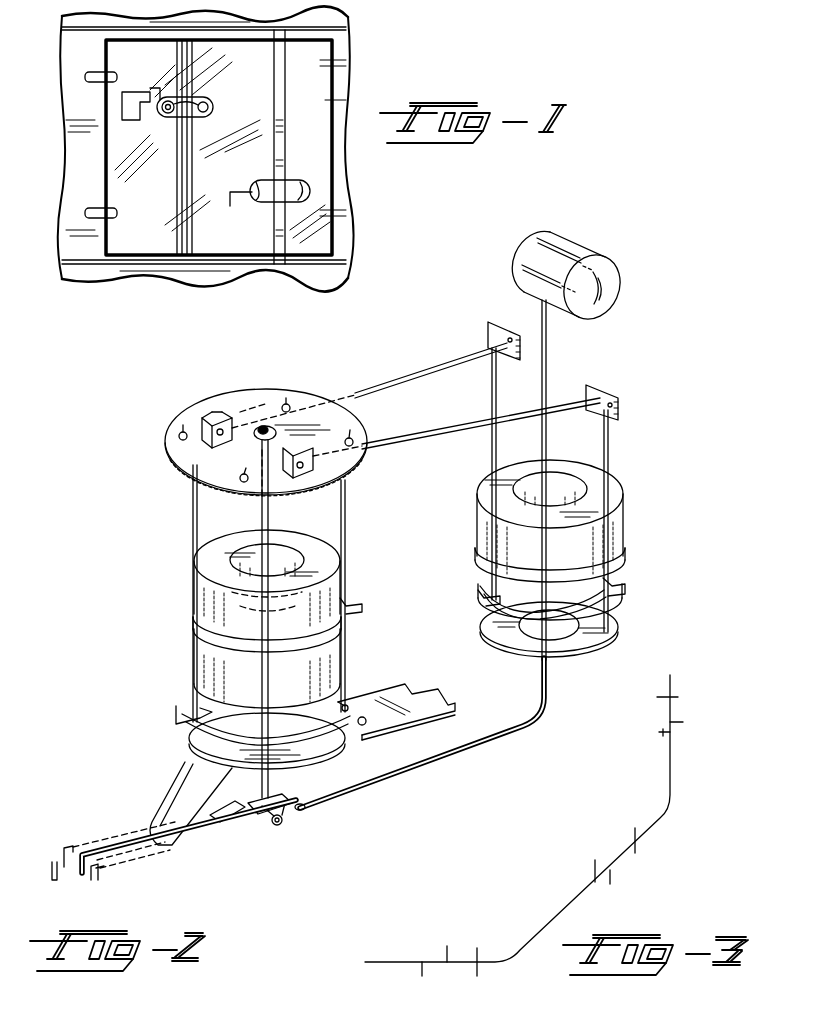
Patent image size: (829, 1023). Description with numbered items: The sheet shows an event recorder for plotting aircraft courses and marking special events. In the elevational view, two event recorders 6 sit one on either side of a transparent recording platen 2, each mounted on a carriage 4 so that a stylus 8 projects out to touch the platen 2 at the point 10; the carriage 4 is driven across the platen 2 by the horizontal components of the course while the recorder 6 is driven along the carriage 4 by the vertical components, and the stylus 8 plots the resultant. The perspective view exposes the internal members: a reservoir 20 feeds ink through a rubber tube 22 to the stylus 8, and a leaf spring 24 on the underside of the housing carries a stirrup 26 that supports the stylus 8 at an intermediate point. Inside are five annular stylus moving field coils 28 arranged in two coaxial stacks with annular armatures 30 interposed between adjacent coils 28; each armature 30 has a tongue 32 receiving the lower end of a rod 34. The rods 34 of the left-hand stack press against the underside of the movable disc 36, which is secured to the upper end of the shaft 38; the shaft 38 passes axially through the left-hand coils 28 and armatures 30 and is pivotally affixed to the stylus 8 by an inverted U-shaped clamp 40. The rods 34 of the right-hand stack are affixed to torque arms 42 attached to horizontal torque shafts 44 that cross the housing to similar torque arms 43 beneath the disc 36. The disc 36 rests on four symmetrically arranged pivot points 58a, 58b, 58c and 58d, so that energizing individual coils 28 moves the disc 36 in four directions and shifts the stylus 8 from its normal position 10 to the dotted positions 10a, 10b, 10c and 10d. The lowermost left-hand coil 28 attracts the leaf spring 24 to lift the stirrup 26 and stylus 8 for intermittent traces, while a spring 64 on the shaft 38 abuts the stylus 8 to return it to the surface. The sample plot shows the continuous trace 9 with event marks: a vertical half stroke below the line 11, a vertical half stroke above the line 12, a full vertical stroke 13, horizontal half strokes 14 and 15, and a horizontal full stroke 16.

In FIG. 1, the recording platen 2 is at (325, 80).
In FIG. 1, the carriage 4 is at (283, 107).
In FIG. 1, the event recorder 6 is at (190, 96).
In FIG. 1, the stylus 8 is at (140, 112).
In FIG. 1, the normal position of stylus 10 is at (135, 90).
In FIG. 2, the normal position of stylus 10 is at (80, 876).
In FIG. 2, the dotted stylus position 10a is at (52, 878).
In FIG. 2, the dotted stylus position 10b is at (64, 850).
In FIG. 2, the dotted stylus position 10c is at (95, 882).
In FIG. 2, the dotted stylus position 10d is at (102, 870).
In FIG. 2, the reservoir 20 is at (608, 292).
In FIG. 2, the rubber tube 22 is at (546, 375).
In FIG. 2, the leaf spring 24 is at (410, 690).
In FIG. 2, the stirrup 26 is at (178, 778).
In FIG. 2, the stylus moving field coil 28 is at (312, 545).
In FIG. 2, the armature 30 is at (200, 634).
In FIG. 2, the tongue 32 is at (363, 608).
In FIG. 2, the rod 34 is at (346, 555).
In FIG. 2, the movable disc 36 is at (238, 398).
In FIG. 2, the shaft 38 is at (270, 516).
In FIG. 2, the inverted U-shaped clamp 40 is at (276, 796).
In FIG. 2, the torque arm 42 is at (488, 334).
In FIG. 2, the torque arm 43 is at (207, 412).
In FIG. 2, the torque shaft 44 is at (445, 370).
In FIG. 2, the pivot point 58a is at (182, 428).
In FIG. 2, the pivot point 58b is at (244, 483).
In FIG. 2, the pivot point 58c is at (288, 400).
In FIG. 2, the pivot point 58d is at (352, 438).
In FIG. 2, the spring 64 is at (230, 816).
In FIG. 3, the continuous plot 9 is at (671, 777).
In FIG. 3, the vertical half stroke below the line 11 is at (613, 880).
In FIG. 3, the vertical half stroke above the line 12 is at (592, 870).
In FIG. 3, the full vertical stroke 13 is at (637, 842).
In FIG. 3, the horizontal half stroke 14 is at (659, 740).
In FIG. 3, the horizontal half stroke 15 is at (678, 720).
In FIG. 3, the horizontal full stroke 16 is at (673, 695).